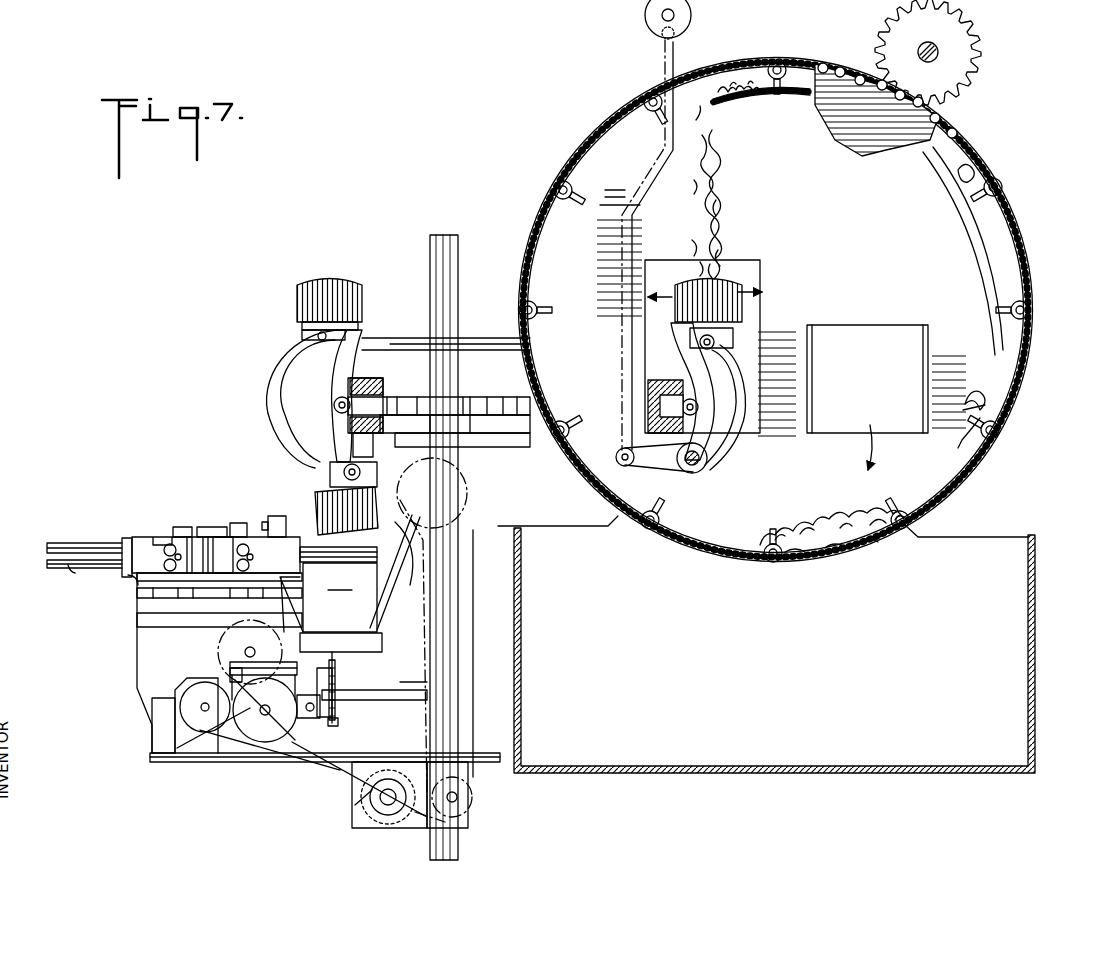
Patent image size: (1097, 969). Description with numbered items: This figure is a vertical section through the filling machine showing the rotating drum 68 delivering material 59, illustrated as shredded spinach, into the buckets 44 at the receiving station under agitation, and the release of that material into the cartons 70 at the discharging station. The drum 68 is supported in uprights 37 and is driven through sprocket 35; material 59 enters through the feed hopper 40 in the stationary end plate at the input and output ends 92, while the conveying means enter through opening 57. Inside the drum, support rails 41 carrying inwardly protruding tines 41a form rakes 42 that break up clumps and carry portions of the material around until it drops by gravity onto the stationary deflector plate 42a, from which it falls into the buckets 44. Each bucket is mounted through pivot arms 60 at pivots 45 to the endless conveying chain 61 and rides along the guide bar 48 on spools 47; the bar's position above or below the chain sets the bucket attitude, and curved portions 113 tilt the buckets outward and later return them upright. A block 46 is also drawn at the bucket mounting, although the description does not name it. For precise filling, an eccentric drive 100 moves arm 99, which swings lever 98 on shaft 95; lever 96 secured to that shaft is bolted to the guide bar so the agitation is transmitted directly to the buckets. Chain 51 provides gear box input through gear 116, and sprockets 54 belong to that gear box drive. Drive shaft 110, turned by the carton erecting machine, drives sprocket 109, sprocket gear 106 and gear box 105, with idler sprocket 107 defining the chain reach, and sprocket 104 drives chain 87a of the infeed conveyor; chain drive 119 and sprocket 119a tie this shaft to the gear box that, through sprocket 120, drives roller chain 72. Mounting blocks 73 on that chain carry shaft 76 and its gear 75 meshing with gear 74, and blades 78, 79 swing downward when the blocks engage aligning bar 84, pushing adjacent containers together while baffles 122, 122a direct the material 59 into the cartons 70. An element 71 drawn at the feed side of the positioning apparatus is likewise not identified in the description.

The sprocket 35 is at (983, 58).
The uprights 37 is at (436, 252).
The feed hopper 40 is at (880, 336).
The support rails 41 is at (996, 432).
The tines 41a is at (975, 424).
The rakes 42 is at (972, 412).
The deflector plate 42a is at (962, 172).
The buckets 44 is at (722, 296).
The pivots 45 is at (684, 405).
The block 46 is at (663, 408).
The spools 47 is at (690, 340).
The guide bar 48 is at (740, 335).
The chain 51 is at (474, 665).
The sprockets 54 is at (475, 797).
The opening 57 is at (752, 265).
The material 59 is at (742, 82).
The pivot arms 60 is at (680, 362).
The conveying chain 61 is at (497, 405).
The rotating drum 68 is at (1035, 254).
The cartons 70 is at (375, 645).
The tube 71 is at (47, 556).
The roller chain 72 is at (137, 610).
The mounting blocks 73 is at (150, 527).
The gear 74 is at (124, 540).
The gear 75 is at (135, 588).
The shaft 76 is at (70, 568).
The blade 78 is at (47, 565).
The blade 79 is at (420, 518).
The aligning bar 84 is at (273, 520).
The chain 87a is at (340, 722).
The output end 92 is at (840, 93).
The shaft 95 is at (700, 466).
The lever 96 is at (718, 432).
The lever 98 is at (635, 465).
The arm 99 is at (618, 266).
The eccentric drive 100 is at (655, 20).
The sprocket 104 is at (340, 682).
The gear box 105 is at (232, 673).
The sprocket gear 106 is at (265, 745).
The idler sprocket 107 is at (185, 707).
The sprocket 109 is at (380, 802).
The drive shaft 110 is at (386, 805).
The curved portions 113 is at (268, 385).
The gear 116 is at (458, 480).
The chain drive 119 is at (330, 770).
The sprocket 119a is at (445, 820).
The sprocket 120 is at (235, 635).
The baffle 122 is at (280, 613).
The baffle 122a is at (373, 615).